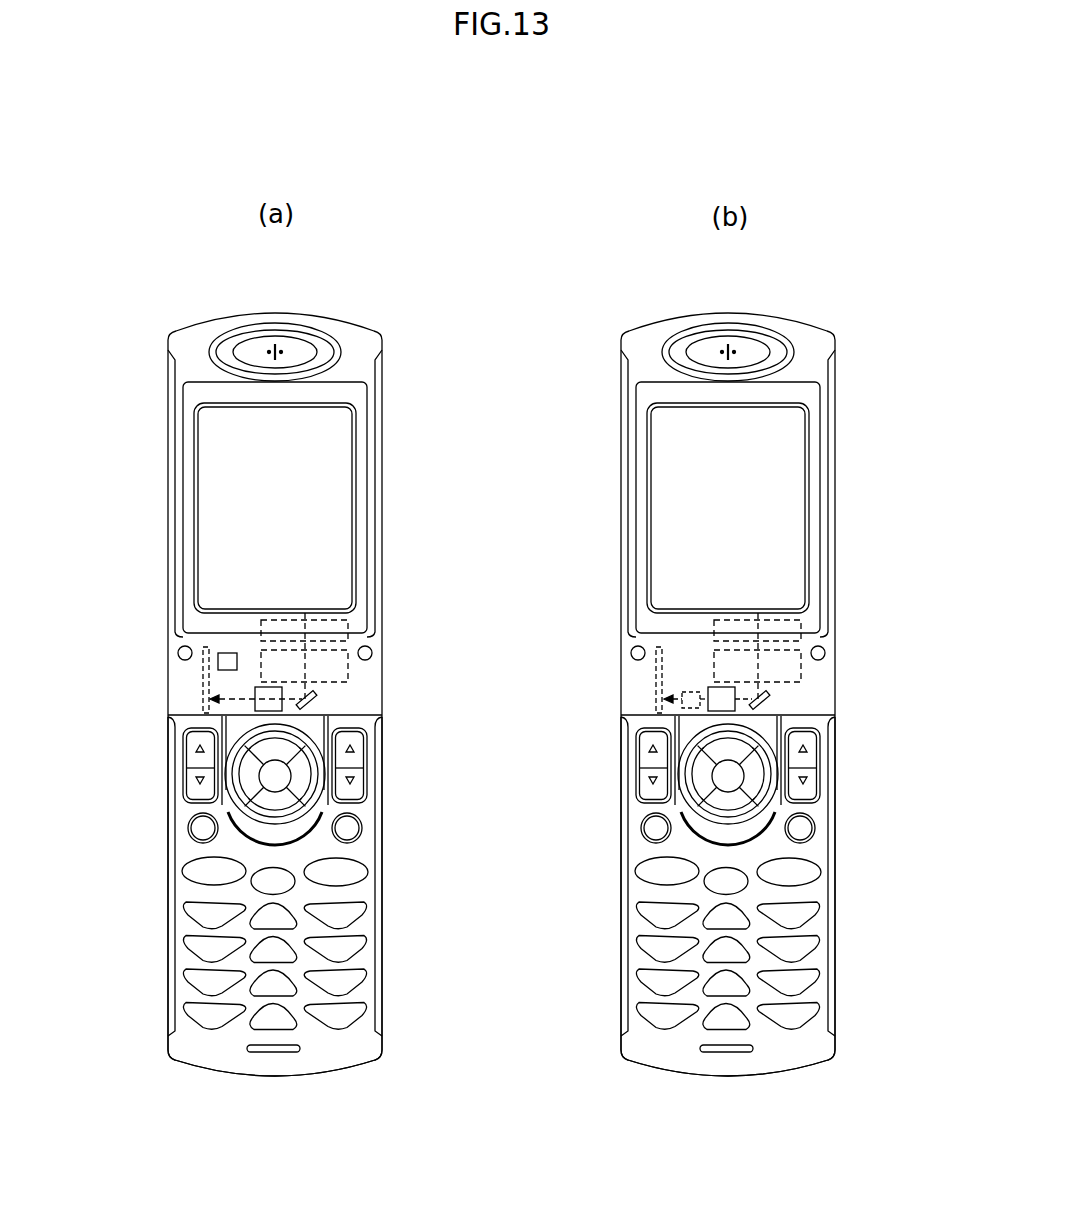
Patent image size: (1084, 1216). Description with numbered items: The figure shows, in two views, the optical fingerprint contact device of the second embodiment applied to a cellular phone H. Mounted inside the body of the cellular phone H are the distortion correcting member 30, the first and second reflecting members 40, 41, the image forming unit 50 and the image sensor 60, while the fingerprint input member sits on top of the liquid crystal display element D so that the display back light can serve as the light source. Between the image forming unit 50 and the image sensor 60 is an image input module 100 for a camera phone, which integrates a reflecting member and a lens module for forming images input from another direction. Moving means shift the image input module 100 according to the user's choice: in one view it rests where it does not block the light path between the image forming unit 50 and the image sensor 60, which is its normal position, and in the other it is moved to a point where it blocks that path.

The display unit D is at (212, 443).
The cellular phone H is at (165, 823).
The distortion correcting member 30 is at (337, 626).
The first reflecting member 40 is at (340, 669).
The second reflecting member 41 is at (309, 708).
The image forming unit 50 is at (255, 706).
The image sensor 60 is at (200, 676).
The image input module 100 is at (230, 653).